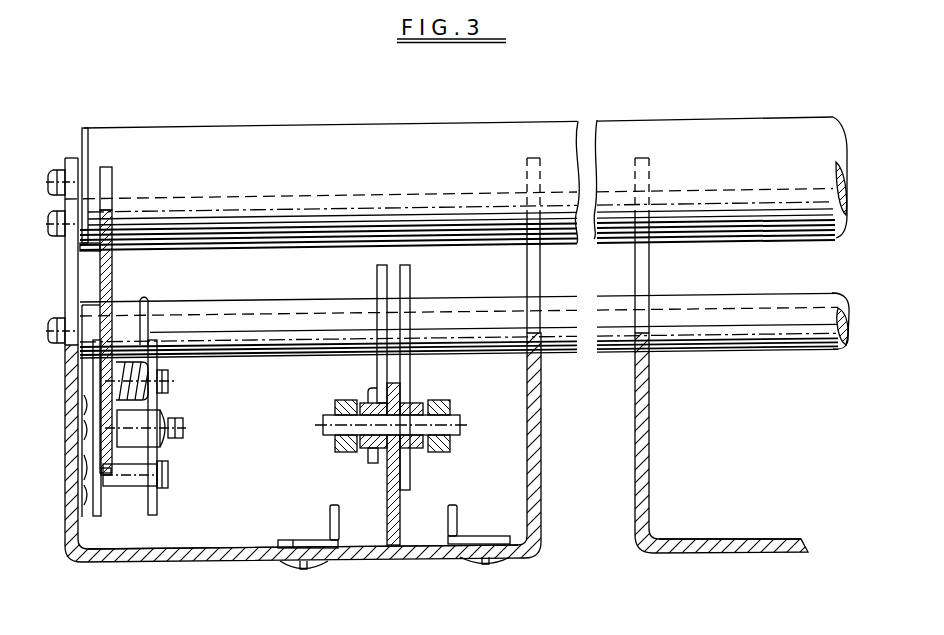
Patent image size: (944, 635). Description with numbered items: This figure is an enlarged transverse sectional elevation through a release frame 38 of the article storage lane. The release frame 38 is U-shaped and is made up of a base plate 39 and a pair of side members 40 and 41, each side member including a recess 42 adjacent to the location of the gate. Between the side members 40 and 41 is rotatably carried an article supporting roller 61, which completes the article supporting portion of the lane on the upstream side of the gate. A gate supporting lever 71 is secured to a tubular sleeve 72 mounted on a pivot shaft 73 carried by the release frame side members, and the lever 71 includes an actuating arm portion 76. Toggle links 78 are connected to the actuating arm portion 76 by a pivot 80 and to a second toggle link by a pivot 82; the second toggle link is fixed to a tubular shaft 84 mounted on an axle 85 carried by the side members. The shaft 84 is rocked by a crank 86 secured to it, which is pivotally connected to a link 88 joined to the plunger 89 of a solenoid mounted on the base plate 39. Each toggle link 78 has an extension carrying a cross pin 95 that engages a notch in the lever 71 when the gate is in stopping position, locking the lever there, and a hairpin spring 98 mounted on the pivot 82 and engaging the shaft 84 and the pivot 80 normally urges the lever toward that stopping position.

The release frame 38 is at (250, 565).
The base plate 39 is at (358, 562).
The side member 40 is at (72, 498).
The side member 41 is at (528, 453).
The recess 42 is at (66, 298).
The article supporting roller 61 is at (638, 118).
The gate supporting lever 71 is at (112, 288).
The tubular sleeve 72 is at (290, 250).
The pivot shaft 73 is at (53, 234).
The actuating arm portion 76 is at (107, 476).
The toggle link 78 is at (93, 387).
The pivot 80 is at (184, 430).
The pivot 82 is at (170, 380).
The tubular shaft 84 is at (283, 302).
The axle 85 is at (51, 333).
The crank 86 is at (377, 283).
The link 88 is at (387, 466).
The plunger 89 is at (351, 400).
The cross pin 95 is at (169, 476).
The hairpin spring 98 is at (146, 297).